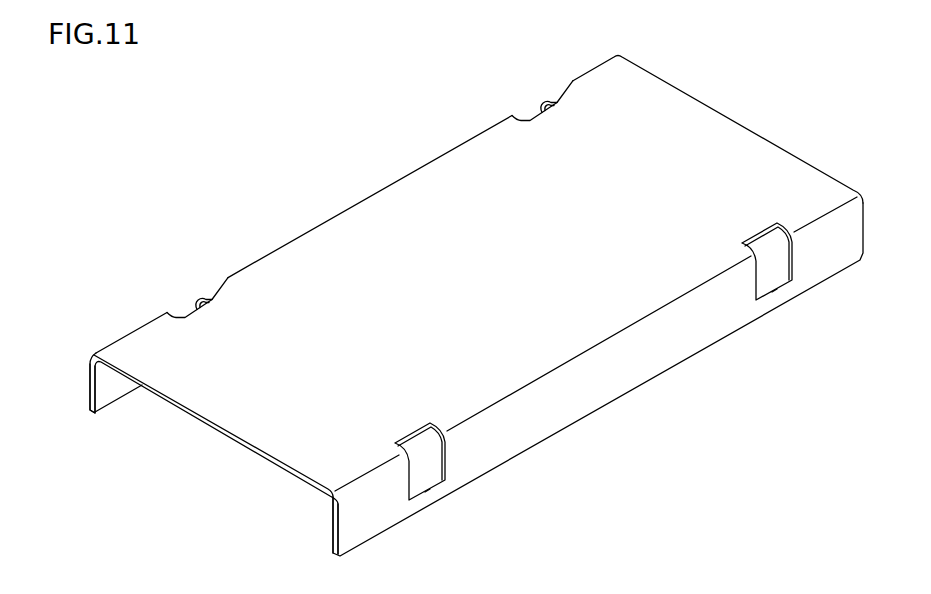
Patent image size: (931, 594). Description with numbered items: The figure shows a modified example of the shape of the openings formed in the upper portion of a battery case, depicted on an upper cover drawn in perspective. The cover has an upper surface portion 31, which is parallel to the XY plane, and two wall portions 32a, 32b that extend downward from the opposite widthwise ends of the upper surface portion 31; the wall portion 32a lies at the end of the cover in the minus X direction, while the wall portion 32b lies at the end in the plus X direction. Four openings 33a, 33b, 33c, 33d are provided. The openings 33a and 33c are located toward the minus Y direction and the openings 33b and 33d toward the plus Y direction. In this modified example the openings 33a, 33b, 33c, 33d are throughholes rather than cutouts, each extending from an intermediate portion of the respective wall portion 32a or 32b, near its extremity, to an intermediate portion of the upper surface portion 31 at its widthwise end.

The upper surface portion 31 is at (720, 147).
The wall portion 32a is at (110, 390).
The wall portion 32b is at (610, 375).
The opening 33a is at (188, 313).
The opening 33b is at (533, 115).
The opening 33c is at (440, 483).
The opening 33d is at (791, 284).